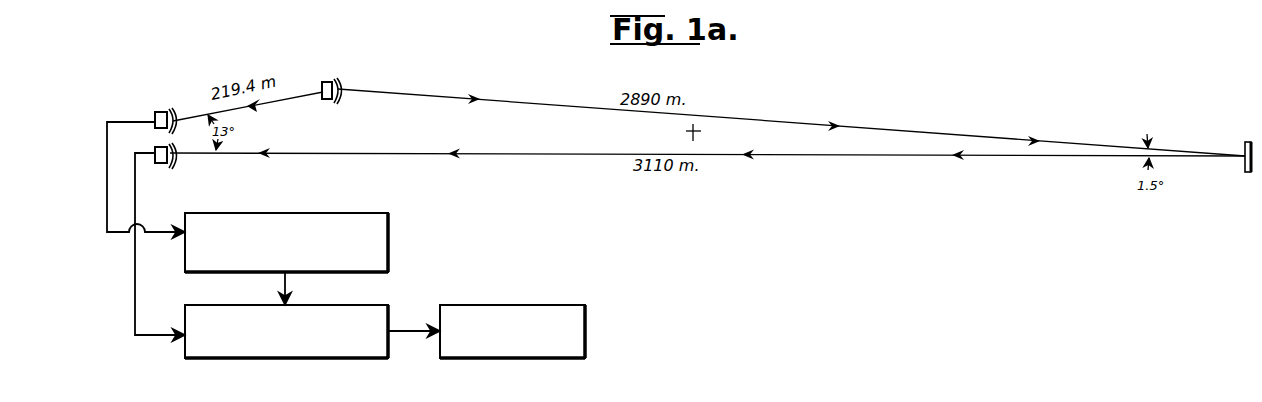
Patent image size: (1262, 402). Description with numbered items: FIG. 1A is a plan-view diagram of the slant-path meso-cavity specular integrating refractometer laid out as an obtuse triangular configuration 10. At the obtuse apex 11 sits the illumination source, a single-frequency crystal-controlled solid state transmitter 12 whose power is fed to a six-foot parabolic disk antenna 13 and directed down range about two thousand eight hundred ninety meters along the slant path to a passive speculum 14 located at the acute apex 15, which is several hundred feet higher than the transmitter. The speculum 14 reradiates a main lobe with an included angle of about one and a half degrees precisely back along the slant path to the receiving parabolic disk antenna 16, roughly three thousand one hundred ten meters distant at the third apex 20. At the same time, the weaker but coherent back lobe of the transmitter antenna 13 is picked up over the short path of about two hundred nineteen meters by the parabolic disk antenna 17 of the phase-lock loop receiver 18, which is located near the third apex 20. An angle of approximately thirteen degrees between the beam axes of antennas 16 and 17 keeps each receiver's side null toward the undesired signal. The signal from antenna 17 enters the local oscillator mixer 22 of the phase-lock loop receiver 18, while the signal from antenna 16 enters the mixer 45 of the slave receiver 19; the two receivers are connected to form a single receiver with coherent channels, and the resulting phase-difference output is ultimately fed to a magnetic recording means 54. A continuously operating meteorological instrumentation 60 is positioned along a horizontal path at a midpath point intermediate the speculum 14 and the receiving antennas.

The obtuse triangular configuration 10 is at (541, 95).
The obtuse apex 11 is at (327, 103).
The transmitter 12 is at (329, 82).
The parabolic disk antenna 13 is at (339, 86).
The passive speculum 14 is at (1244, 144).
The acute apex 15 is at (1241, 163).
The receiving parabolic disk antenna 16 is at (172, 162).
The parabolic disk antenna 17 is at (174, 110).
The phase-lock loop receiver 18 is at (396, 242).
The slave receiver 19 is at (327, 359).
The third apex 20 is at (150, 133).
The local oscillator mixer 22 is at (158, 111).
The mixer 45 is at (158, 164).
The magnetic recording means 54 is at (512, 359).
The meteorological instrumentation 60 is at (696, 137).